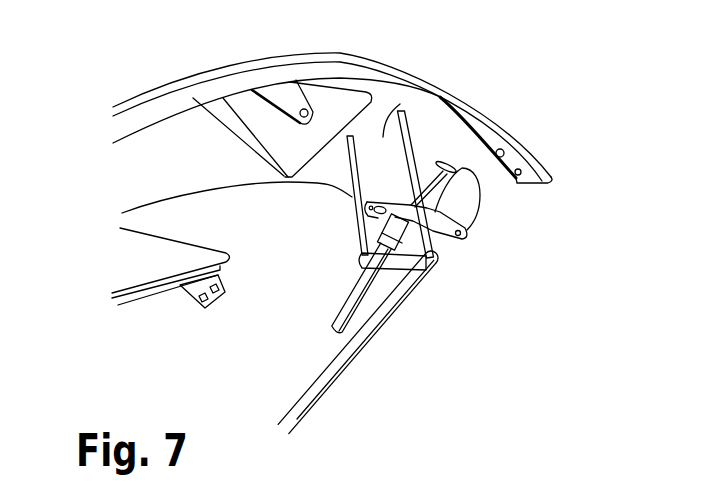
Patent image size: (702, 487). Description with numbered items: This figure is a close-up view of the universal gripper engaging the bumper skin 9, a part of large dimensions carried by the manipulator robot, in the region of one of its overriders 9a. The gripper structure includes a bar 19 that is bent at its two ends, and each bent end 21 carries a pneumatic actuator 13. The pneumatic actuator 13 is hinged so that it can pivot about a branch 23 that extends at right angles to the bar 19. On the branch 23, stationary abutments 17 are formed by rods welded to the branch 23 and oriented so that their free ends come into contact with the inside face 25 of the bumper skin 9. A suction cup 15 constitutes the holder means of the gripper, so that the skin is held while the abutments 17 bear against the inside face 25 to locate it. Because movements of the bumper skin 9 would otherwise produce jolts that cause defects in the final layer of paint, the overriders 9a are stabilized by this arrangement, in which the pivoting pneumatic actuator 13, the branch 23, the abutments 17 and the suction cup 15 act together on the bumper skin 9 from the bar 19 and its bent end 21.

The bumper skin 9 is at (167, 105).
The overrider 9a is at (487, 142).
The pneumatic actuator 13 is at (363, 232).
The suction cup 15 is at (480, 183).
The abutment 17 is at (406, 133).
The bar 19 is at (358, 350).
The bent end 21 is at (425, 313).
The branch 23 is at (388, 342).
The inside face 25 is at (384, 137).